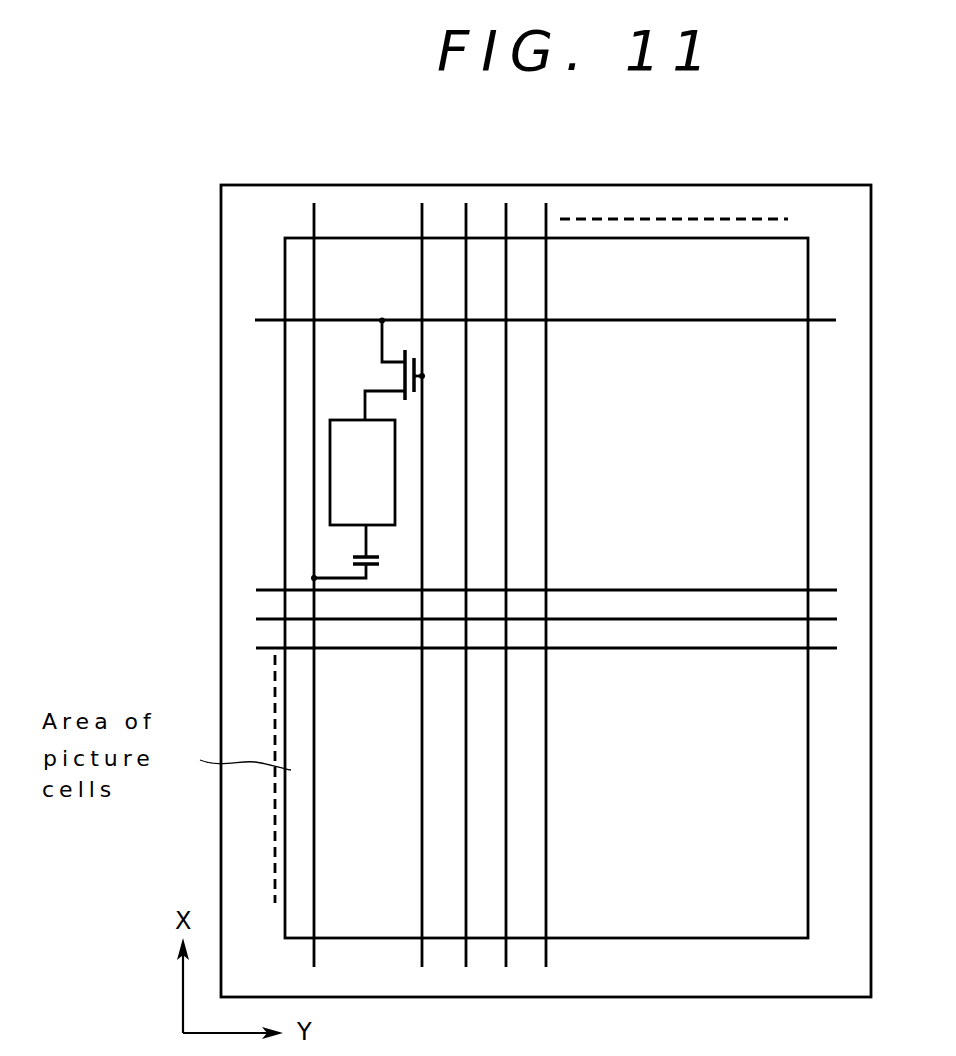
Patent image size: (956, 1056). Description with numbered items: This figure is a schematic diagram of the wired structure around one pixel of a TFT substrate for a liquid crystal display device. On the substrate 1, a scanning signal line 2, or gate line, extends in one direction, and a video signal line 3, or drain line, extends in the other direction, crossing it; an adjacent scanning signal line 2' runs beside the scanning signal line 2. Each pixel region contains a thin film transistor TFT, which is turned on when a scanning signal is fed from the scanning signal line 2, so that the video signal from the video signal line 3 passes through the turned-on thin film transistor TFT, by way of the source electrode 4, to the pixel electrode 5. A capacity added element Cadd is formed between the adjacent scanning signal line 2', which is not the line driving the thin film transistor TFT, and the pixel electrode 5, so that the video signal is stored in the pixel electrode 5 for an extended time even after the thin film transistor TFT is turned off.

The substrate 1 is at (245, 843).
The scanning signal line 2 is at (401, 549).
The adjacent scanning signal line 2' is at (290, 549).
The video signal line 3 is at (267, 319).
The source electrode 4 is at (363, 406).
The pixel electrode 5 is at (383, 513).
The thin film transistor TFT is at (412, 345).
The capacity added element Cadd is at (342, 558).